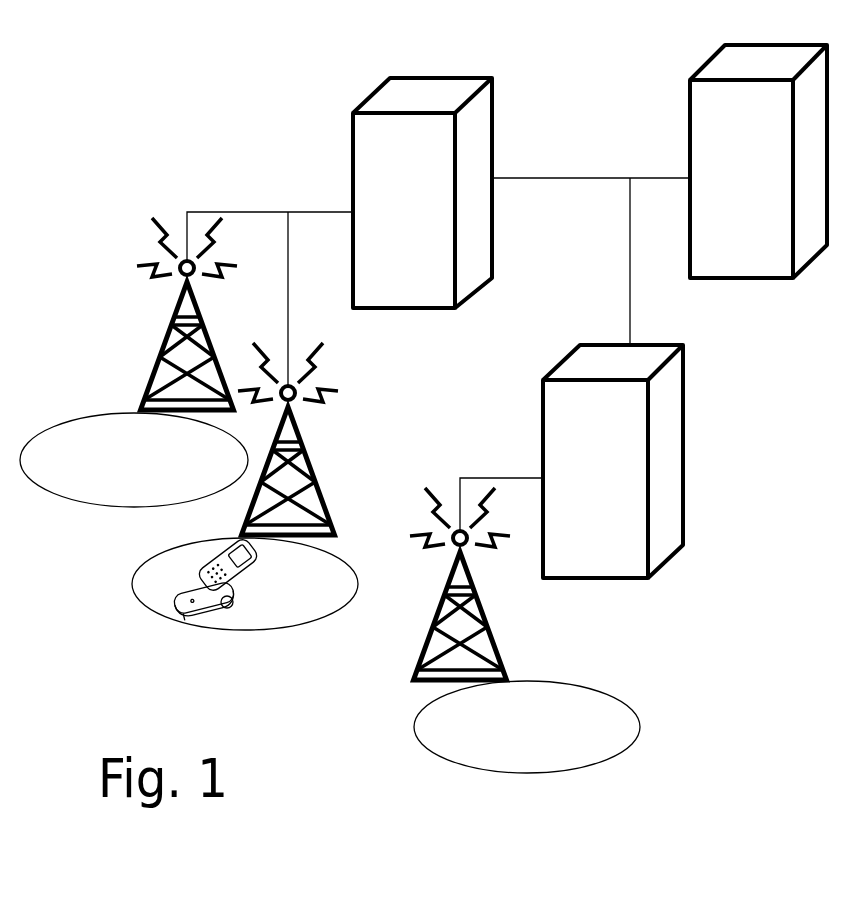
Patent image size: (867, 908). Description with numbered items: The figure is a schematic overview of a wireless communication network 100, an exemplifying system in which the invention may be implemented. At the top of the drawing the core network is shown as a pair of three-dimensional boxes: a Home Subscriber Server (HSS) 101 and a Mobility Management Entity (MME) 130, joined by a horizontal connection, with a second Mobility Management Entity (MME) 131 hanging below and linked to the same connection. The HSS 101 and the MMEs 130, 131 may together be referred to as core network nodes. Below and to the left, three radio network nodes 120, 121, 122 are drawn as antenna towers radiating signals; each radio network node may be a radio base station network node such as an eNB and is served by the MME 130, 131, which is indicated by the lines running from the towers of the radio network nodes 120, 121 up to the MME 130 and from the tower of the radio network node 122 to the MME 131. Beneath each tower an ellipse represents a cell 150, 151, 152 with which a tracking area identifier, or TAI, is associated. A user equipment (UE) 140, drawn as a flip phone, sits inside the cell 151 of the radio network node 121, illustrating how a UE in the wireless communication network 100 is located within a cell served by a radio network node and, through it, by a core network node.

The wireless communication network 100 is at (247, 114).
The Home Subscriber Server (HSS) 101 is at (758, 161).
The radio network node 120 is at (143, 314).
The radio network node 121 is at (329, 439).
The radio network node 122 is at (422, 592).
The Mobility Management Entity (MME) 130 is at (422, 193).
The Mobility Management Entity (MME) 131 is at (613, 461).
The user equipment (UE) 140 is at (235, 579).
The cell 150 is at (134, 492).
The cell 151 is at (245, 607).
The cell 152 is at (542, 695).